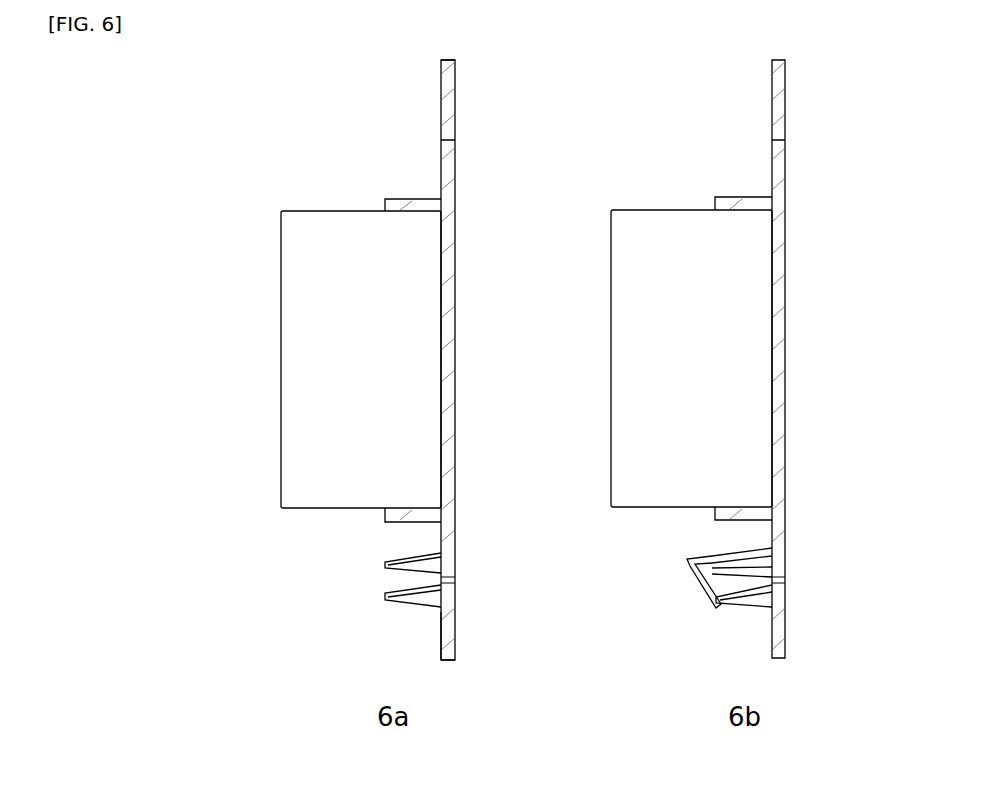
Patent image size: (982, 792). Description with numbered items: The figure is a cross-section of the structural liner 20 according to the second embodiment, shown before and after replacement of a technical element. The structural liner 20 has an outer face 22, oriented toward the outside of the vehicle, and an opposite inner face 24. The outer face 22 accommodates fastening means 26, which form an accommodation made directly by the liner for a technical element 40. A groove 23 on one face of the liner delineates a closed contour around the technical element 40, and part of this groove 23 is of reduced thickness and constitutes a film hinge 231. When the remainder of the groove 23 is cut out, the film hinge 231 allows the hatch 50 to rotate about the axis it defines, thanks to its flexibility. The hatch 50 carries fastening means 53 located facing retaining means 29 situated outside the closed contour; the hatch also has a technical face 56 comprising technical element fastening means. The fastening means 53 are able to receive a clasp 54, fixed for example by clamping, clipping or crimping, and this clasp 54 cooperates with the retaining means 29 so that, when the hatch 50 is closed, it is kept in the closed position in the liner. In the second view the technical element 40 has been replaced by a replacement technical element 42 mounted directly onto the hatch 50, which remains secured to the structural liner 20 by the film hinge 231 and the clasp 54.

The structural liner 20 is at (441, 90).
The outer face 22 is at (437, 632).
The groove 23 is at (455, 580).
The inner face 24 is at (459, 647).
The fastening means 26 is at (403, 205).
The retaining means 29 is at (390, 598).
The technical element 40 is at (348, 332).
The replacement technical element 42 is at (708, 293).
The hatch 50 is at (455, 312).
The fastening means of the hatch 53 is at (390, 563).
The clasp 54 is at (685, 560).
The technical face 56 is at (437, 533).
The film hinge 231 is at (455, 140).